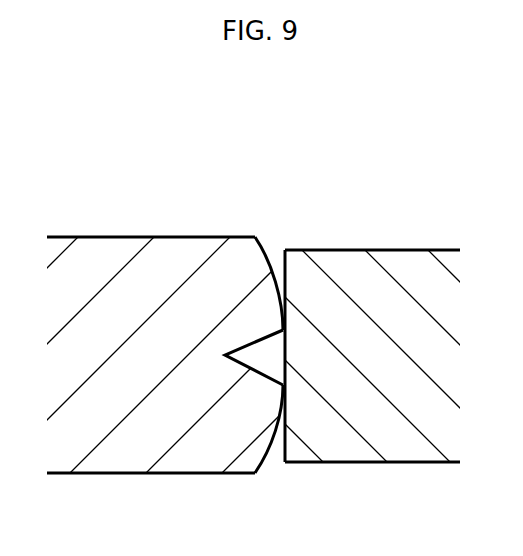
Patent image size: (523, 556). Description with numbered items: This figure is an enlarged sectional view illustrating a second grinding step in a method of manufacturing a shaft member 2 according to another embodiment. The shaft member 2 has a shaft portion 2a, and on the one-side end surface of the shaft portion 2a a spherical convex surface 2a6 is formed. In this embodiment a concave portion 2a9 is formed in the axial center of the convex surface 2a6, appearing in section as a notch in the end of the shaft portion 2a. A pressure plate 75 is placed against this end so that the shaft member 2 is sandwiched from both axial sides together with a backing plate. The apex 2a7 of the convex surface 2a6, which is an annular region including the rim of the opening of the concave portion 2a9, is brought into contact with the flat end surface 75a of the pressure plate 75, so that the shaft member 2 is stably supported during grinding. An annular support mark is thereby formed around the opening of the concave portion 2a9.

The shaft member 2 is at (106, 237).
The shaft portion 2a is at (175, 257).
The spherical convex surface 2a6 is at (274, 277).
The apex 2a7 is at (285, 360).
The concave portion 2a9 is at (262, 340).
The pressure plate 75 is at (412, 270).
The flat end surface 75a is at (284, 446).